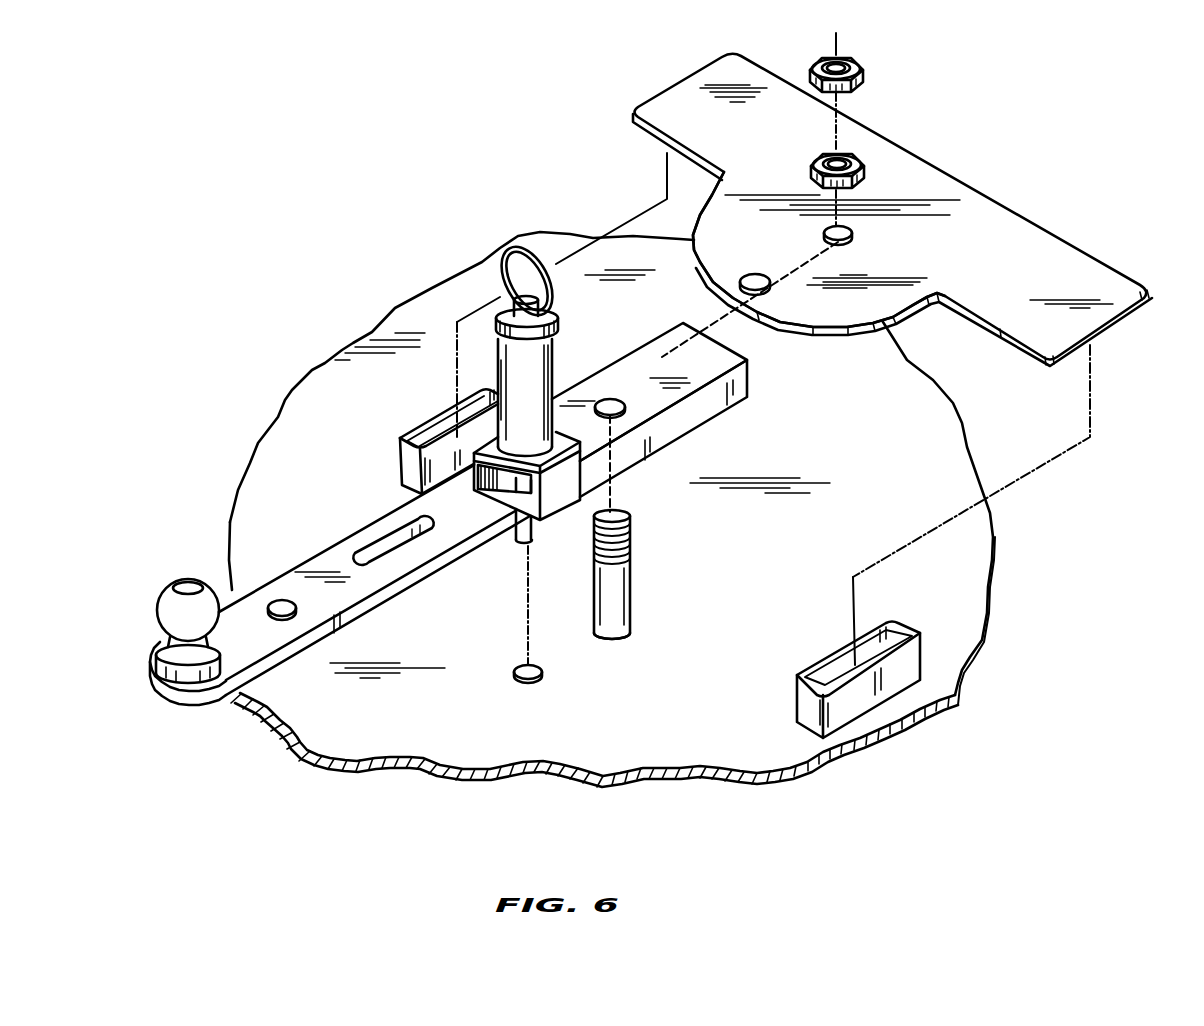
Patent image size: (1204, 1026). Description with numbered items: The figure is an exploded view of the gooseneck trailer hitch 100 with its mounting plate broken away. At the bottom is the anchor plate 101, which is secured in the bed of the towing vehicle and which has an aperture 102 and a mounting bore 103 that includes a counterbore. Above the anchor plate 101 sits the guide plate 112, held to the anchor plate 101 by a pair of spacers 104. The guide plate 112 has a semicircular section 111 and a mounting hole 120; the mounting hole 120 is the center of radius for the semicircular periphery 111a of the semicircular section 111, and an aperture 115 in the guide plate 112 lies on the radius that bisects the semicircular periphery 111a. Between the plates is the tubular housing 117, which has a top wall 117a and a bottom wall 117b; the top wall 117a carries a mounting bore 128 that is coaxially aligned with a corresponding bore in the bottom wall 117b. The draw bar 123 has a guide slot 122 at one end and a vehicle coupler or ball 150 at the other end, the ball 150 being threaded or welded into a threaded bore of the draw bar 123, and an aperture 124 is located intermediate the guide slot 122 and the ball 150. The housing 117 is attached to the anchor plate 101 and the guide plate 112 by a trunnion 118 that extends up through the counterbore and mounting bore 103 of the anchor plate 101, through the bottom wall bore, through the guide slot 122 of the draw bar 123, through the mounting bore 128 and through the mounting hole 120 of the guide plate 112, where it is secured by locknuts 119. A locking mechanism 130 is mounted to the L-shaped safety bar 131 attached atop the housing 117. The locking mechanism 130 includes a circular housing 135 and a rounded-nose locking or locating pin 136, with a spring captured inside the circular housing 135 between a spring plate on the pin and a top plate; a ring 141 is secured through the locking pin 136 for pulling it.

The gooseneck trailer hitch 100 is at (1068, 578).
The anchor plate 101 is at (637, 753).
The aperture 102 is at (524, 681).
The mounting bore 103 is at (628, 624).
The spacers 104 is at (410, 428).
The semicircular section 111 is at (887, 303).
The semicircular periphery 111a is at (848, 334).
The guide plate 112 is at (892, 217).
The aperture 115 is at (756, 275).
The housing 117 is at (677, 412).
The top wall 117a is at (590, 455).
The bottom wall 117b is at (494, 498).
The trunnion 118 is at (643, 577).
The locknuts 119 is at (857, 159).
The mounting hole 120 is at (852, 236).
The guide slot 122 is at (378, 555).
The draw bar 123 is at (340, 589).
The aperture 124 is at (284, 600).
The mounting bore 128 is at (607, 398).
The locking mechanism 130 is at (546, 393).
The safety bar 131 is at (528, 508).
The circular housing 135 is at (560, 350).
The locking pin 136 is at (528, 541).
The ring 141 is at (513, 257).
The ball 150 is at (160, 612).